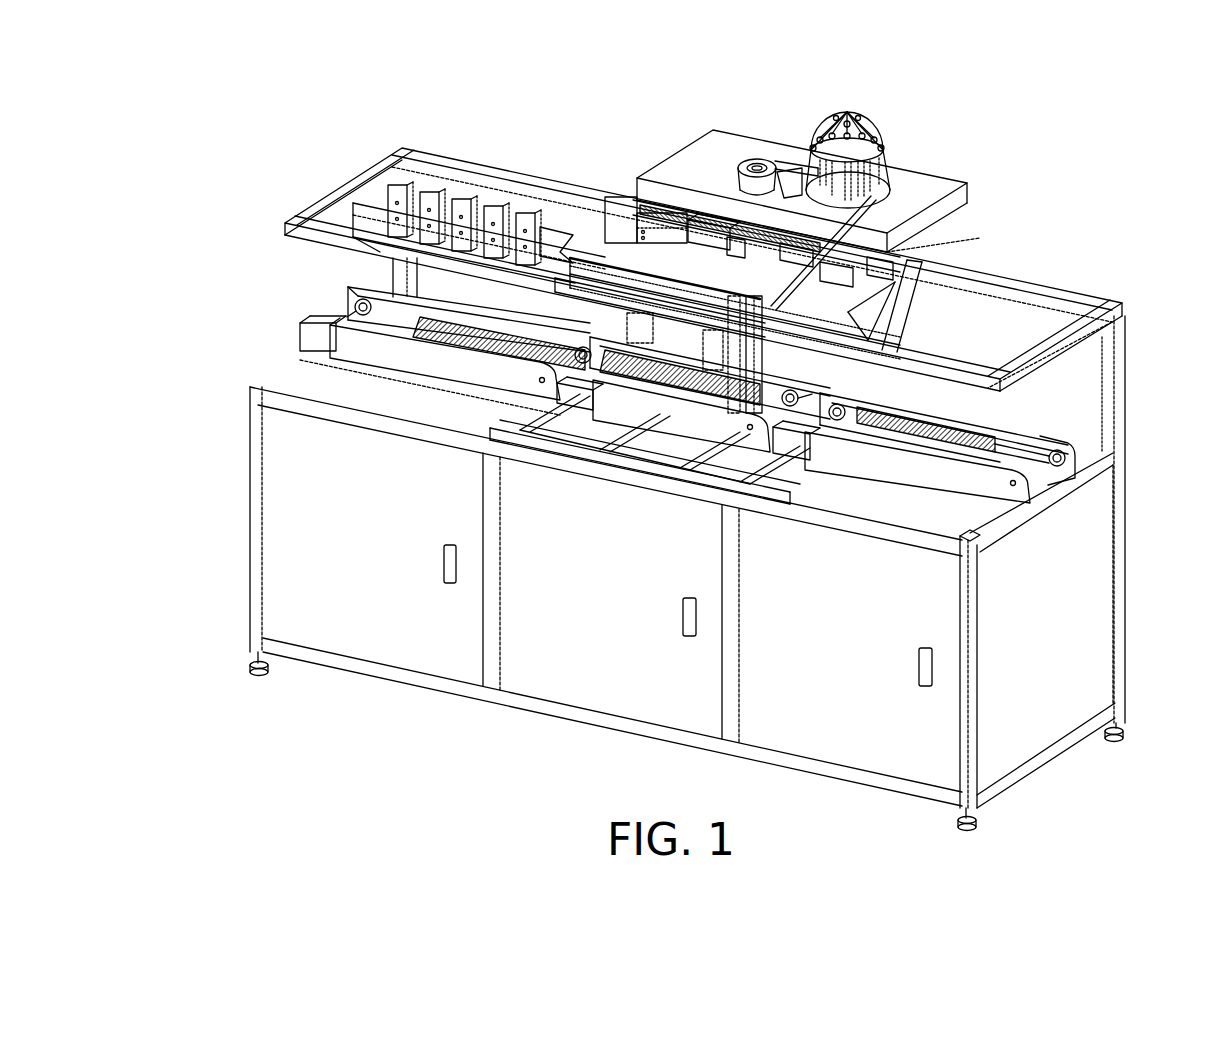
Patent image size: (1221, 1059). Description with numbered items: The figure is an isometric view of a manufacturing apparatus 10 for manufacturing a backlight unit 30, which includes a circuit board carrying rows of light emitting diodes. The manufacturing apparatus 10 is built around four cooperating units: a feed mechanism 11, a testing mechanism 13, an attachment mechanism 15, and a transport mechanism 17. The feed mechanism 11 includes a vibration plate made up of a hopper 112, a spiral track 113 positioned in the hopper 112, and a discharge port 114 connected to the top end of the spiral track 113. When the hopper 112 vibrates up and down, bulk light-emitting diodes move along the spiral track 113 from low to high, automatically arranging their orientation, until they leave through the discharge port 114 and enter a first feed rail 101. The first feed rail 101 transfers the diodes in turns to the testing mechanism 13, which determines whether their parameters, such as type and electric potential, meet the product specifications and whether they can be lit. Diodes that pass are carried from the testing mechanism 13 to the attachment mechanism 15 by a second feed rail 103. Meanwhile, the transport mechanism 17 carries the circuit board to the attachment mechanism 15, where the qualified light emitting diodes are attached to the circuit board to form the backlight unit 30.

The manufacturing apparatus 10 is at (650, 85).
The feed mechanism 11 is at (735, 158).
The testing mechanism 13 is at (883, 145).
The attachment mechanism 15 is at (630, 188).
The transport mechanism 17 is at (1102, 454).
The backlight unit 30 is at (450, 346).
The first feed rail 101 is at (796, 174).
The second feed rail 103 is at (935, 242).
The hopper 112 is at (740, 184).
The spiral track 113 is at (752, 160).
The discharge port 114 is at (761, 163).